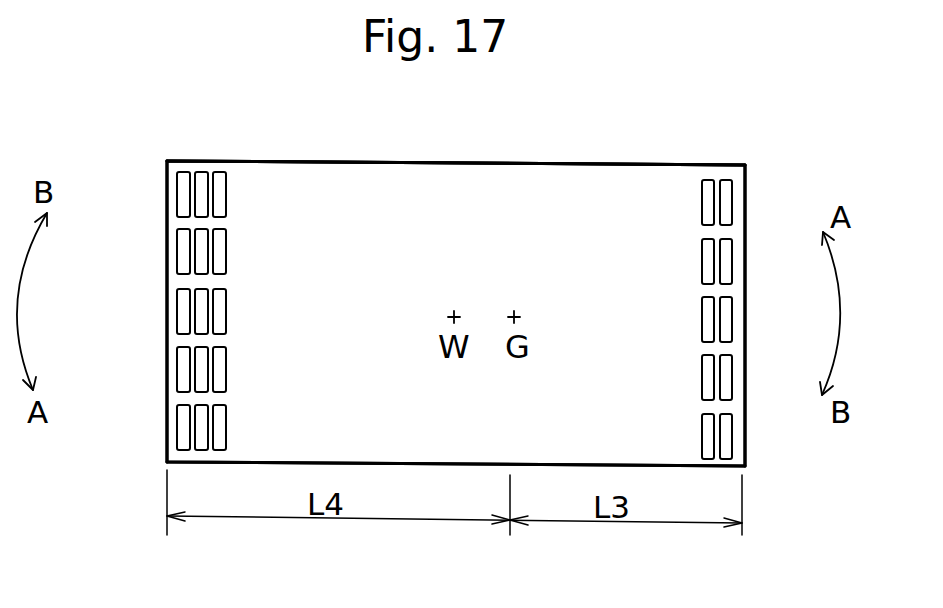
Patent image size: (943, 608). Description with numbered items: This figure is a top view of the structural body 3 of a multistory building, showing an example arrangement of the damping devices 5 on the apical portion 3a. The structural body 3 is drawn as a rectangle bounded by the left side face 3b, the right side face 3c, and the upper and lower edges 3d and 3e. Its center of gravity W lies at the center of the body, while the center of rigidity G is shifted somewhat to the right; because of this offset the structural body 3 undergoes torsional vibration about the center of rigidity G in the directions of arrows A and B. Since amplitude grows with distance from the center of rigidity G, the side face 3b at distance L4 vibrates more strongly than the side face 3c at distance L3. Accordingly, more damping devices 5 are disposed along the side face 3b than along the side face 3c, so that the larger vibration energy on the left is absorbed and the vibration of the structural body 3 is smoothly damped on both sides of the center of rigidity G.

The structural body 3 is at (224, 130).
The apical portion 3a is at (536, 180).
The side face 3b is at (166, 386).
The side face 3c is at (745, 425).
The top edge of plate 3d is at (617, 165).
The bottom edge of plate 3e is at (708, 467).
The damping device 5 is at (225, 307).